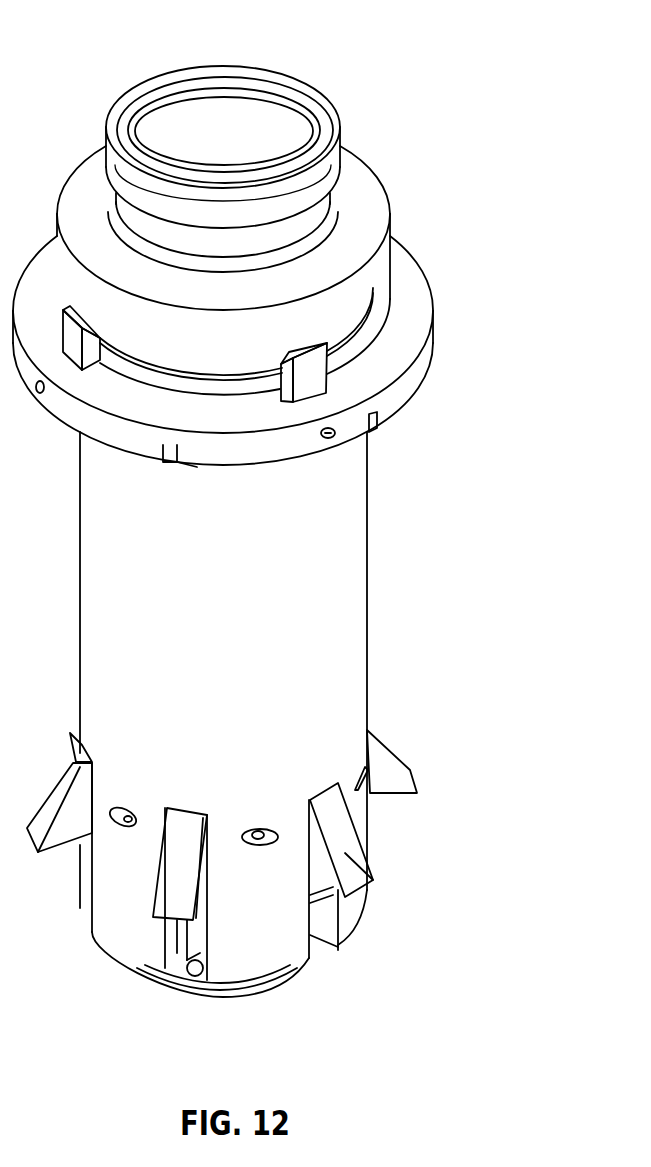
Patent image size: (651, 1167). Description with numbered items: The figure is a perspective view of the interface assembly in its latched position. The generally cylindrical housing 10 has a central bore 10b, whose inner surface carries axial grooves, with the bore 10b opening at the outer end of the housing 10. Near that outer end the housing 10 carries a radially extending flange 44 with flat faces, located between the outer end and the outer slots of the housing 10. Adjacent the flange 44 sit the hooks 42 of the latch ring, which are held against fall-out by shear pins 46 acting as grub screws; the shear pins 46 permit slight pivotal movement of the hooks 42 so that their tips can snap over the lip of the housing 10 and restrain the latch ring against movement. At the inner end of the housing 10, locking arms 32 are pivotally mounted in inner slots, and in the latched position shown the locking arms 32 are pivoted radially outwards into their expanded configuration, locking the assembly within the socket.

The housing 10 is at (300, 547).
The bore 10b is at (215, 112).
The flange 44 is at (388, 185).
The hooks 42 is at (316, 367).
The shear pins 46 is at (332, 437).
The locking arms 32 is at (372, 877).